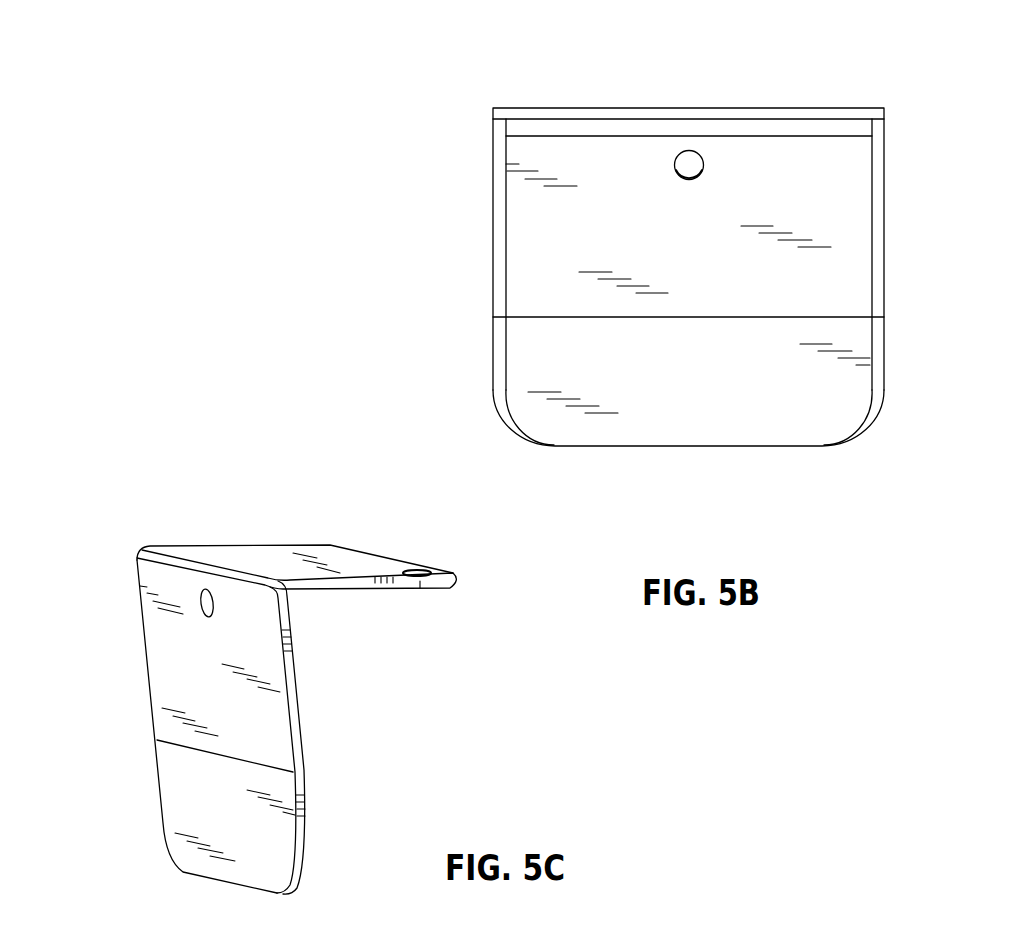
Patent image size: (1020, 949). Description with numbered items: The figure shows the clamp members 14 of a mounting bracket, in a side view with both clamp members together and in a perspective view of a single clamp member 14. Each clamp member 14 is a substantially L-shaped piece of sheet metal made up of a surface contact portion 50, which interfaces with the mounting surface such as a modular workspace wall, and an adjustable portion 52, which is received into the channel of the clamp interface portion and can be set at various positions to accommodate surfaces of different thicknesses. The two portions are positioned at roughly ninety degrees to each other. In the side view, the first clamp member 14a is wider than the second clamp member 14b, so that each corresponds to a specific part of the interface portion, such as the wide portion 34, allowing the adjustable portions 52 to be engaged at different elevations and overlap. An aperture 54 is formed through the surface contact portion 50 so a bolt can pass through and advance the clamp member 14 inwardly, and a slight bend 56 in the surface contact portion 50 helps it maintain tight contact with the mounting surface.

In FIG. 5C, the clamp member 14 is at (100, 557).
In FIG. 5B, the first clamp member 14a is at (493, 250).
In FIG. 5B, the second clamp member 14b is at (843, 268).
In FIG. 5B, the wide portion 34 is at (336, 0).
In FIG. 5B, the surface contact portion 50 is at (693, 418).
In FIG. 5C, the surface contact portion 50 is at (293, 677).
In FIG. 5B, the adjustable portion 52 is at (688, 108).
In FIG. 5C, the adjustable portion 52 is at (255, 555).
In FIG. 5B, the aperture 54 is at (689, 165).
In FIG. 5C, the aperture 54 is at (192, 620).
In FIG. 5C, the bend 56 is at (300, 770).